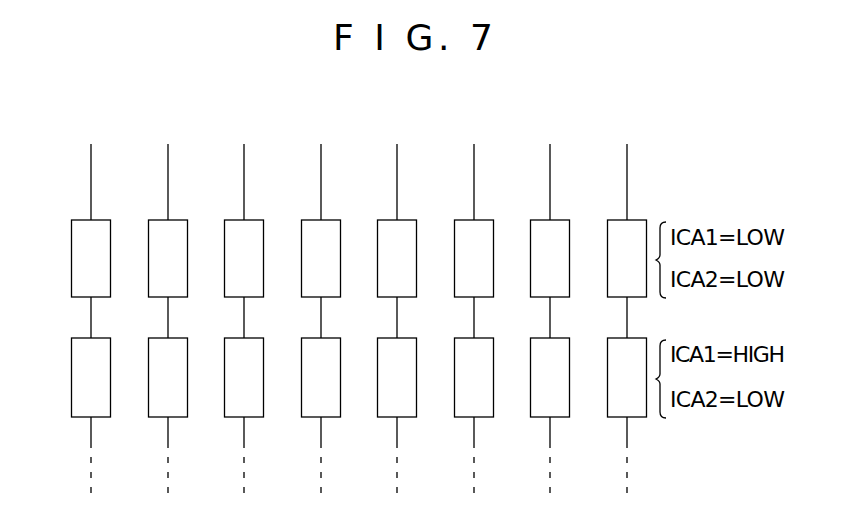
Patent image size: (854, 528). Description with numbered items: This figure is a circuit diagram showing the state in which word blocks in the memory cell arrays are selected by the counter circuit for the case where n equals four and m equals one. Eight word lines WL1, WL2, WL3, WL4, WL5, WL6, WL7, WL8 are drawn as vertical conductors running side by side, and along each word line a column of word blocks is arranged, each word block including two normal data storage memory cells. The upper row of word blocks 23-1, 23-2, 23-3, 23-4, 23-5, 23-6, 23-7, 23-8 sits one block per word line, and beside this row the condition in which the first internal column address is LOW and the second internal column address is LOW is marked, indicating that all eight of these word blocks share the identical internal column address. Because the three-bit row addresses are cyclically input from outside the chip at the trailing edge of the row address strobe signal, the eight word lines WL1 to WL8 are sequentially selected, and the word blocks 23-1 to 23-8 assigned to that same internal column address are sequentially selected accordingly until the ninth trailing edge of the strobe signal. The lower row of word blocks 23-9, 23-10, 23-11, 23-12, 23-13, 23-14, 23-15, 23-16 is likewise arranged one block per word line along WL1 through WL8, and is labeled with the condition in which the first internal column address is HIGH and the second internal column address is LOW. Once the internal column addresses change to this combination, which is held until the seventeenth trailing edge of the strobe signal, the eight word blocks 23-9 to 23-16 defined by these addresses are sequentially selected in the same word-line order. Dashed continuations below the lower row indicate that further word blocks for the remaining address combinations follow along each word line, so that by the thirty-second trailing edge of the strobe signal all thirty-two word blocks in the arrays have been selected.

The word line WL1 is at (93, 171).
The word line WL2 is at (170, 171).
The word line WL3 is at (246, 171).
The word line WL4 is at (323, 171).
The word line WL5 is at (399, 171).
The word line WL6 is at (476, 171).
The word line WL7 is at (552, 171).
The word line WL8 is at (629, 171).
The word block 23-1 is at (100, 297).
The word block 23-2 is at (177, 297).
The word block 23-3 is at (253, 297).
The word block 23-4 is at (330, 297).
The word block 23-5 is at (406, 297).
The word block 23-6 is at (483, 297).
The word block 23-7 is at (559, 297).
The word block 23-8 is at (636, 297).
The word block 23-9 is at (100, 417).
The word block 23-10 is at (177, 417).
The word block 23-11 is at (253, 417).
The word block 23-12 is at (330, 417).
The word block 23-13 is at (406, 417).
The word block 23-14 is at (483, 417).
The word block 23-15 is at (559, 417).
The word block 23-16 is at (636, 417).